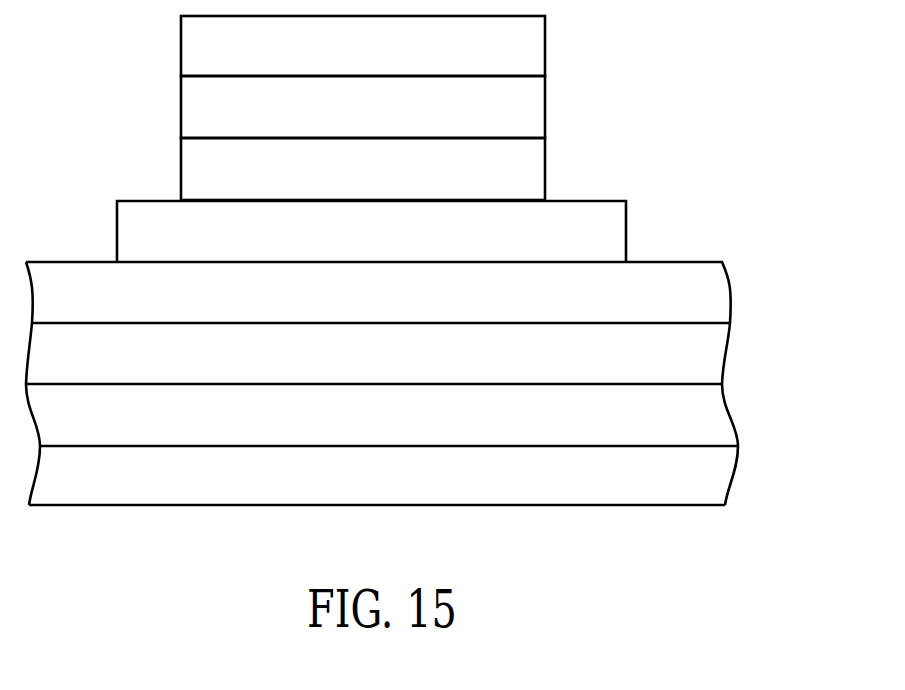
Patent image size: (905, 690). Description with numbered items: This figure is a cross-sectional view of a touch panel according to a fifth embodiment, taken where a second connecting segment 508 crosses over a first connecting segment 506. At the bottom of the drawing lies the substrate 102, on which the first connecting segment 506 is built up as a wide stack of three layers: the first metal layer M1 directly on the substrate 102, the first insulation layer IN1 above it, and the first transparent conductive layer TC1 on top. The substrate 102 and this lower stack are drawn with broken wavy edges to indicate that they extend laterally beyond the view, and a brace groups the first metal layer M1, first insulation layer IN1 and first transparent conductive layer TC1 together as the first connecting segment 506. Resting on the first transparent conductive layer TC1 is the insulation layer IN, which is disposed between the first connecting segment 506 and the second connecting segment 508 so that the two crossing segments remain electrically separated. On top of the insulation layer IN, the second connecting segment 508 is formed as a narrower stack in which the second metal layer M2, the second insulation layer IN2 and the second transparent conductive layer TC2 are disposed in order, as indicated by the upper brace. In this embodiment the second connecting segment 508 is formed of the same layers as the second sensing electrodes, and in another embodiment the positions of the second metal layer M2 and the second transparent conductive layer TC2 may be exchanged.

The second connecting segment 508 is at (411, 108).
The first connecting segment 506 is at (434, 354).
The substrate 102 is at (334, 488).
The second transparent conductive layer TC2 is at (326, 60).
The second insulation layer IN2 is at (329, 122).
The second metal layer M2 is at (327, 183).
The insulation layer IN is at (334, 243).
The first transparent conductive layer TC1 is at (331, 310).
The first insulation layer IN1 is at (334, 368).
The first metal layer M1 is at (333, 428).